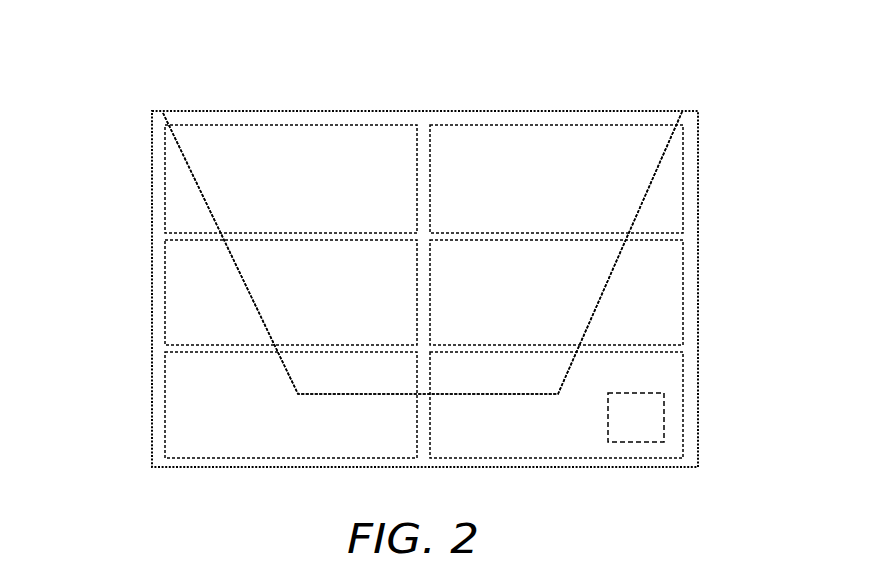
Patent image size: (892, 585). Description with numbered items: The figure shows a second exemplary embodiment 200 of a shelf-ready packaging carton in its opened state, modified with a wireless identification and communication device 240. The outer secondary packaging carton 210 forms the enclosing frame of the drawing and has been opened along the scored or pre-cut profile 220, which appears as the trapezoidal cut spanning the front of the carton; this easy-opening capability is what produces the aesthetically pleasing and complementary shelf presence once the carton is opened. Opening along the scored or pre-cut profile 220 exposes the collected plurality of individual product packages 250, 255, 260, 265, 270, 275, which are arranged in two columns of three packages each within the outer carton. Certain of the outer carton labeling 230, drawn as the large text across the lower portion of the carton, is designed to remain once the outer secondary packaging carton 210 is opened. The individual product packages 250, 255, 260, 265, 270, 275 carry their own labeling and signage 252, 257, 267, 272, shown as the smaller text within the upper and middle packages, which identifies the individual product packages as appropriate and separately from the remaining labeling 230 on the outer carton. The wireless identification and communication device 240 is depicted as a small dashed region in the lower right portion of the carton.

The second exemplary embodiment 200 is at (172, 97).
The outer secondary packaging carton 210 is at (316, 111).
The scored or pre-cut profile 220 is at (650, 178).
The outer carton labeling 230 is at (277, 421).
The wireless identification and communication device 240 is at (653, 420).
The individual product package 250 is at (178, 180).
The labeling and signage 252 is at (257, 205).
The individual product package 255 is at (177, 285).
The labeling and signage 257 is at (287, 320).
The individual product package 260 is at (172, 387).
The individual product package 265 is at (672, 190).
The labeling and signage 267 is at (560, 205).
The individual product package 270 is at (673, 280).
The labeling and signage 272 is at (560, 320).
The individual product package 275 is at (673, 375).